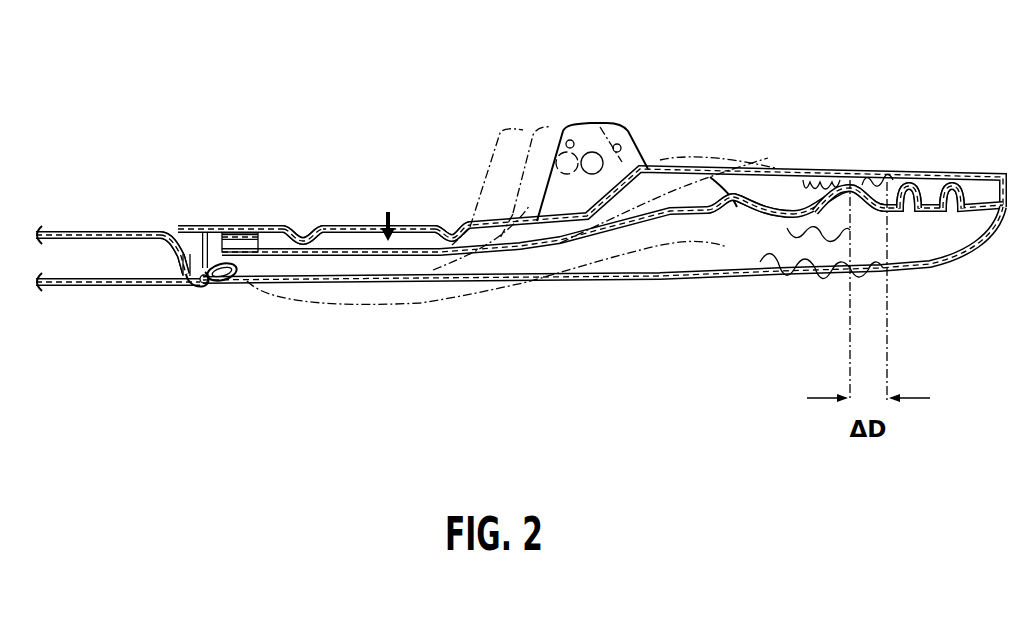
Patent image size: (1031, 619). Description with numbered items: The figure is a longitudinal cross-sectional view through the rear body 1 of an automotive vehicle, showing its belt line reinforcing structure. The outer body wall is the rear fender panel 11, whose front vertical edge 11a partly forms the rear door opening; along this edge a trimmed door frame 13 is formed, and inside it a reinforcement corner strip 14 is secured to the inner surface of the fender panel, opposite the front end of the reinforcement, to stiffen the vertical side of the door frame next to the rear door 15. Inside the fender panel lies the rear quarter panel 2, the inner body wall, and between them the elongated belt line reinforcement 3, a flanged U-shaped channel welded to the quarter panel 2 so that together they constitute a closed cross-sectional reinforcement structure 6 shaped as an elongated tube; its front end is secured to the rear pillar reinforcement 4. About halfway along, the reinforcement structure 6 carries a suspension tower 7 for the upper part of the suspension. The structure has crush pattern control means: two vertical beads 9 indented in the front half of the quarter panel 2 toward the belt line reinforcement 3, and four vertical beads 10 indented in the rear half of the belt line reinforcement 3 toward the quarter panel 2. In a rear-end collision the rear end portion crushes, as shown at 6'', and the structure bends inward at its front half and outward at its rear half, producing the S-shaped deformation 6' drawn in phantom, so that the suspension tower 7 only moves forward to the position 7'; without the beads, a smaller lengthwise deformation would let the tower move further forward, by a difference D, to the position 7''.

The rear body 1 is at (195, 317).
The rear quarter panel 2 is at (693, 164).
The belt line reinforcement 3 is at (533, 243).
The rear pillar reinforcement 4 is at (238, 232).
The reinforcement structure 6 is at (380, 198).
The S-shaped deformation 6' is at (511, 262).
The crushed rear end portion 6'' is at (840, 187).
The suspension tower 7 is at (592, 143).
The displaced suspension tower position 7' is at (531, 140).
The prior-art displaced suspension tower position 7'' is at (487, 157).
The vertical beads 9 is at (307, 228).
The vertical beads 10 is at (732, 210).
The rear fender panel 11 is at (656, 283).
The front vertical edge 11a is at (177, 236).
The trimmed door frame 13 is at (205, 284).
The reinforcement corner strip 14 is at (233, 284).
The rear door 15 is at (53, 288).